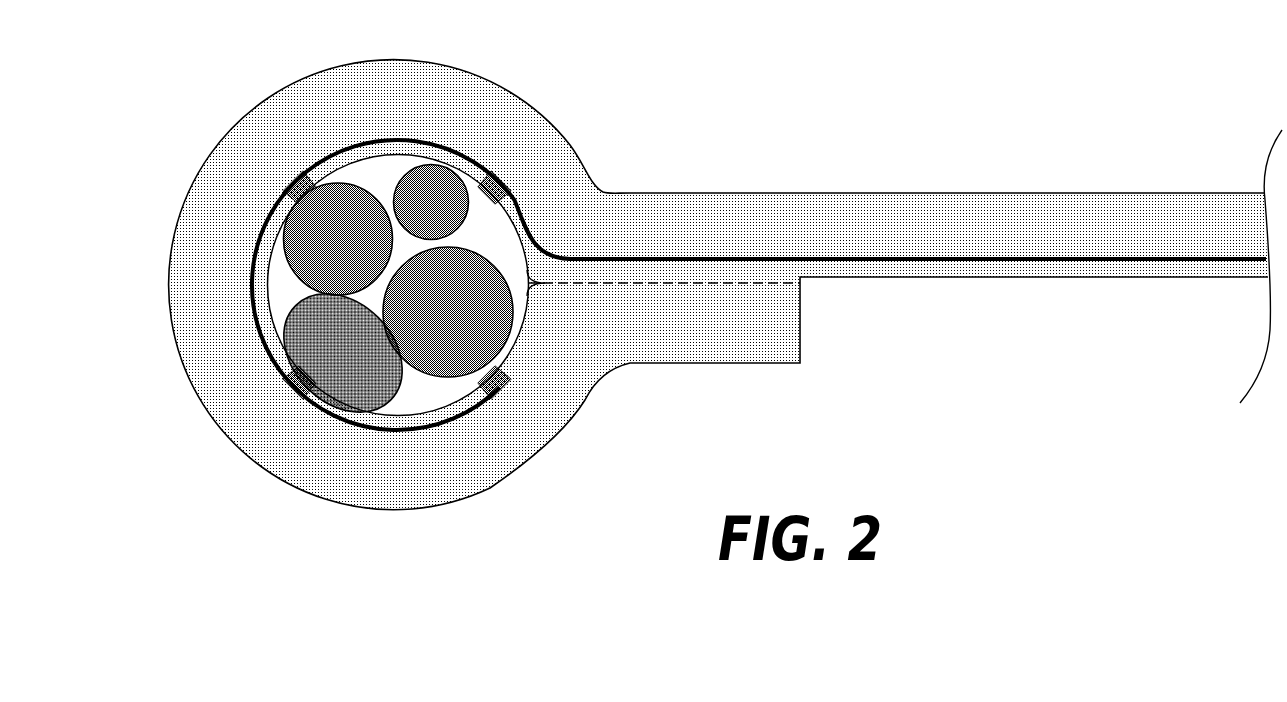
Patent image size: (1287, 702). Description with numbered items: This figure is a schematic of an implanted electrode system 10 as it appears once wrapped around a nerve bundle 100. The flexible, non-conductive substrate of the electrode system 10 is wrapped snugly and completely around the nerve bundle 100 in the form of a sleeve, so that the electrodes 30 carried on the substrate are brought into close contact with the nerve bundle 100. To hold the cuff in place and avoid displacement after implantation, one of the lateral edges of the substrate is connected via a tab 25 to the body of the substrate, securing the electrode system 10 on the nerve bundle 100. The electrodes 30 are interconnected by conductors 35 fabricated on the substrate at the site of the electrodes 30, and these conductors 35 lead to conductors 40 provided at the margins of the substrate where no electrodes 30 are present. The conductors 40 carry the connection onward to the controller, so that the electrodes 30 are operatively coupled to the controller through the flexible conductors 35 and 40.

The electrode system 10 is at (1080, 126).
The tab 25 is at (725, 285).
The electrodes 30 is at (297, 180).
The conductors 35 is at (472, 154).
The conductors 40 is at (1108, 257).
The nerve bundle 100 is at (275, 298).